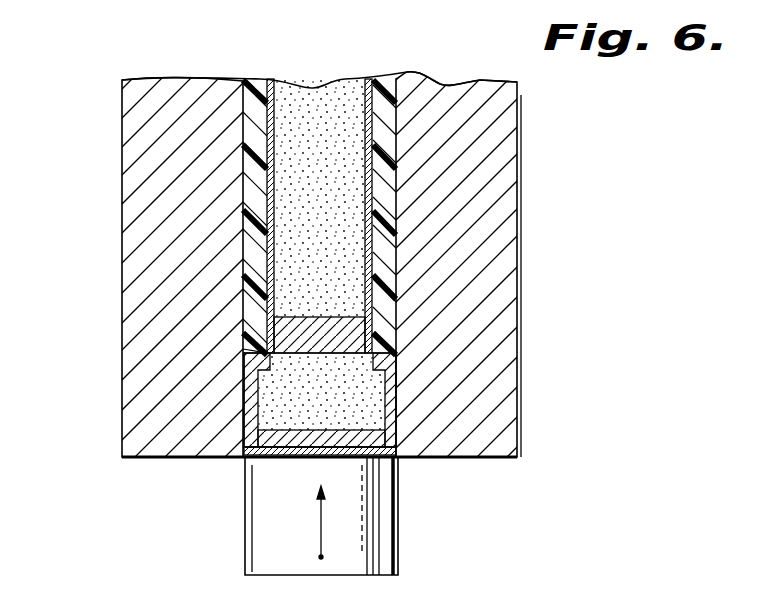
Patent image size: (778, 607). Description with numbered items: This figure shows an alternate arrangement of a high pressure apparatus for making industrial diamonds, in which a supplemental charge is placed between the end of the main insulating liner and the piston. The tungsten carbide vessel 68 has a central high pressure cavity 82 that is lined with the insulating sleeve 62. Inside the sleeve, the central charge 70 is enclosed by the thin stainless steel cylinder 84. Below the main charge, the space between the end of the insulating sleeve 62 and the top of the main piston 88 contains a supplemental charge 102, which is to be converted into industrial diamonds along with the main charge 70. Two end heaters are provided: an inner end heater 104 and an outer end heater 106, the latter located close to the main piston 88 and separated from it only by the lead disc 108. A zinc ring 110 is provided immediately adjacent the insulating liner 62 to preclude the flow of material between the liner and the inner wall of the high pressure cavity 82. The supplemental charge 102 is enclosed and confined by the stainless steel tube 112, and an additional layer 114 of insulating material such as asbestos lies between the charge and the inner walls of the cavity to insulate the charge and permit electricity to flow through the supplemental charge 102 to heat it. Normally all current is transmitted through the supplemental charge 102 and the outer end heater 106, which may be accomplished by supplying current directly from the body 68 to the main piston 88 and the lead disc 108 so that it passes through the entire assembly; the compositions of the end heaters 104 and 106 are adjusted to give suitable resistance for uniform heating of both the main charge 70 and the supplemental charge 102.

The insulating sleeve 62 is at (385, 130).
The tungsten carbide vessel 68 is at (492, 293).
The central charge 70 is at (305, 147).
The central high pressure cavity 82 is at (248, 98).
The thin stainless steel cylinder 84 is at (363, 97).
The main piston 88 is at (363, 542).
The supplemental charge 102 is at (355, 390).
The inner end heater 104 is at (347, 325).
The outer end heater 106 is at (384, 442).
The lead disc 108 is at (297, 458).
The zinc ring 110 is at (244, 358).
The stainless steel tube 112 is at (244, 415).
The additional layer of insulating material 114 is at (244, 390).